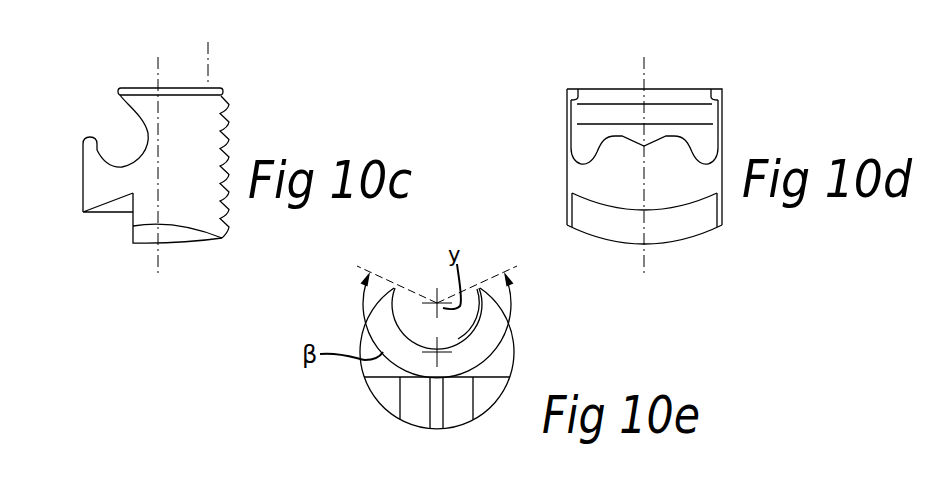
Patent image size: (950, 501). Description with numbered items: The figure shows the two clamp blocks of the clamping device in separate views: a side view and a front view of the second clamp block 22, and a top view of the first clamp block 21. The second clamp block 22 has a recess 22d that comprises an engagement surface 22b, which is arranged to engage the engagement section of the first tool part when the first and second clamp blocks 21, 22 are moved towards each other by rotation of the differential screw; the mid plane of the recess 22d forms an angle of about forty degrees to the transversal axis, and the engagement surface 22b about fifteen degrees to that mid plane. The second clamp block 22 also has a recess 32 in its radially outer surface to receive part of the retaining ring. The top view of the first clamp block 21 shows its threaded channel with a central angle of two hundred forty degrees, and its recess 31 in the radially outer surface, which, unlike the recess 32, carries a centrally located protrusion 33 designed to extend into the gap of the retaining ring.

In FIG. 10E, the first clamp block 21 is at (535, 312).
In FIG. 10C, the second clamp block 22 is at (262, 88).
In FIG. 10D, the second clamp block 22 is at (745, 105).
In FIG. 10C, the engagement surface 22b is at (102, 152).
In FIG. 10C, the recess 22d is at (111, 105).
In FIG. 10D, the recess 22d is at (580, 134).
In FIG. 10E, the recess 22d is at (437, 318).
In FIG. 10E, the recess 31 is at (485, 387).
In FIG. 10C, the recess 32 is at (112, 213).
In FIG. 10D, the recess 32 is at (662, 212).
In FIG. 10E, the protrusion 33 is at (443, 410).